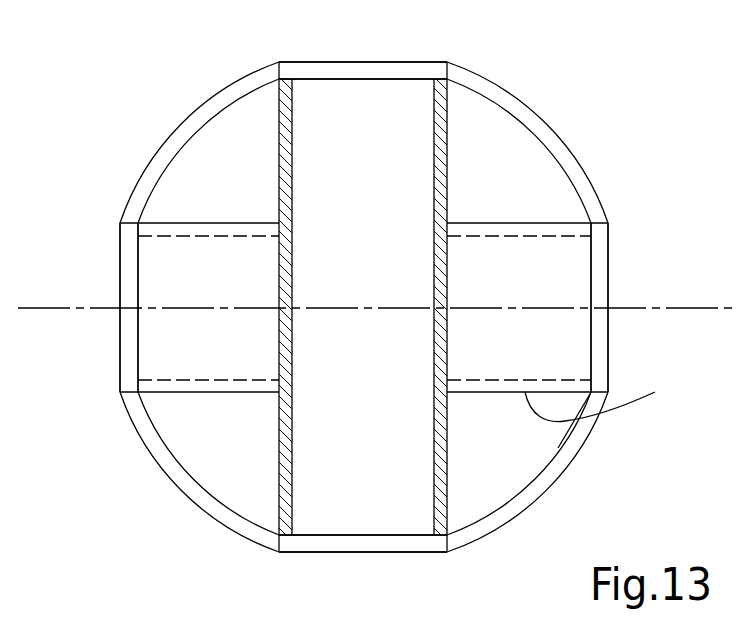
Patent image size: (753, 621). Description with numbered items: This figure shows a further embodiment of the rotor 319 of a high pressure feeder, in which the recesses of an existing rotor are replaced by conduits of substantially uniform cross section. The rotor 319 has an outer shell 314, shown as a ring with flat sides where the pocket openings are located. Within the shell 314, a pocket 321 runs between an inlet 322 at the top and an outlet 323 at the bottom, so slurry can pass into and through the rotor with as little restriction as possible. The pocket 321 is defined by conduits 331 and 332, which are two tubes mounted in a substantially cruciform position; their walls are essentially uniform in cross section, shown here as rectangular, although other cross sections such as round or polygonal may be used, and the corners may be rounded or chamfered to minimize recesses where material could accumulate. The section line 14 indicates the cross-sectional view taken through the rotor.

The section line 14- 14 is at (32, 316).
The shell 314 is at (143, 176).
The rotor 319 is at (401, 309).
The pocket 321 is at (340, 232).
The inlet 322 is at (335, 80).
The outlet 323 is at (375, 551).
The conduit 331 is at (292, 417).
The conduit 332 is at (606, 408).